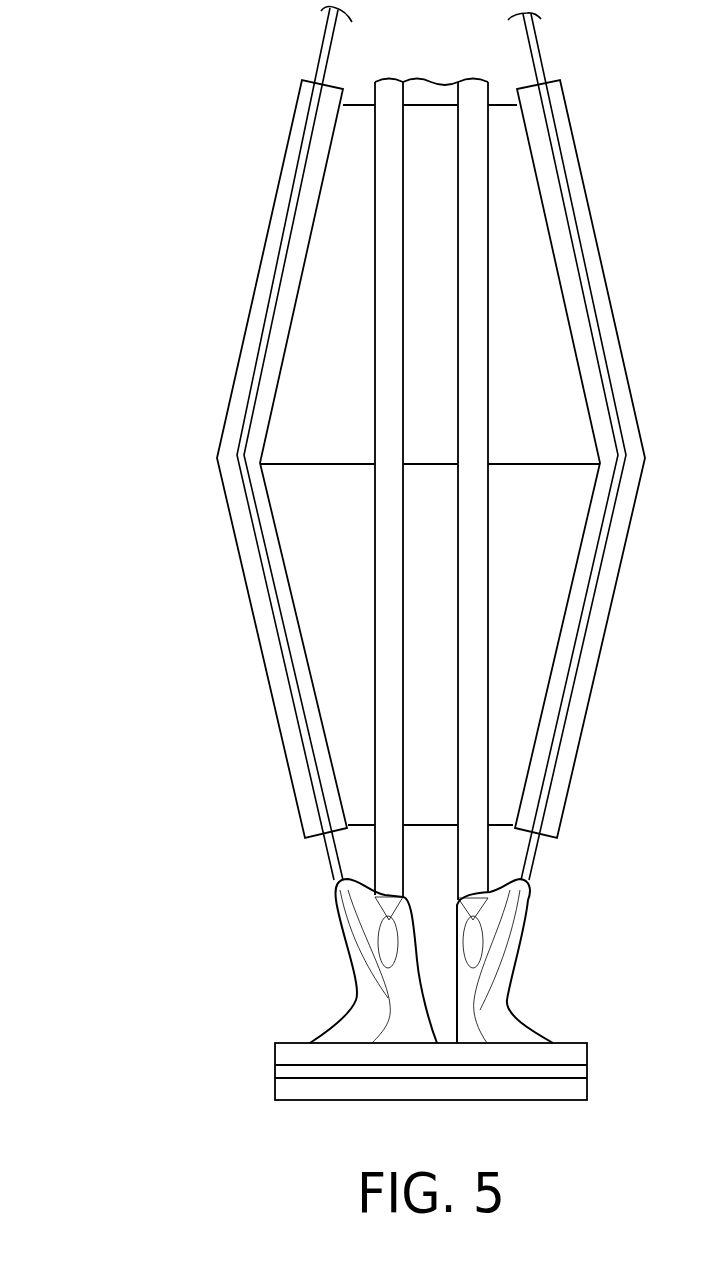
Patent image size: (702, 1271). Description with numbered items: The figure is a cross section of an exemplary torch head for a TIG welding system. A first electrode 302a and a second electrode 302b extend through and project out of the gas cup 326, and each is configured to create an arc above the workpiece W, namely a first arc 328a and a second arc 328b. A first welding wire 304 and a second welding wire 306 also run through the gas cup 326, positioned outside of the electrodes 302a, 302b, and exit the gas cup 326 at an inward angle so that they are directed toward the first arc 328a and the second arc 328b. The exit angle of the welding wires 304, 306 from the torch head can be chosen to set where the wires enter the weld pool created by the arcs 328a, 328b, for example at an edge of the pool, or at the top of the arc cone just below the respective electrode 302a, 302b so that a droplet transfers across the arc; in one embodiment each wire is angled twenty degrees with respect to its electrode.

The gas cup 326 is at (168, 568).
The first welding wire 304 is at (301, 745).
The second welding wire 306 is at (560, 745).
The first electrode 302a is at (386, 861).
The second electrode 302b is at (477, 858).
The first arc 328a is at (361, 997).
The second arc 328b is at (499, 997).
The workpiece W is at (577, 1055).